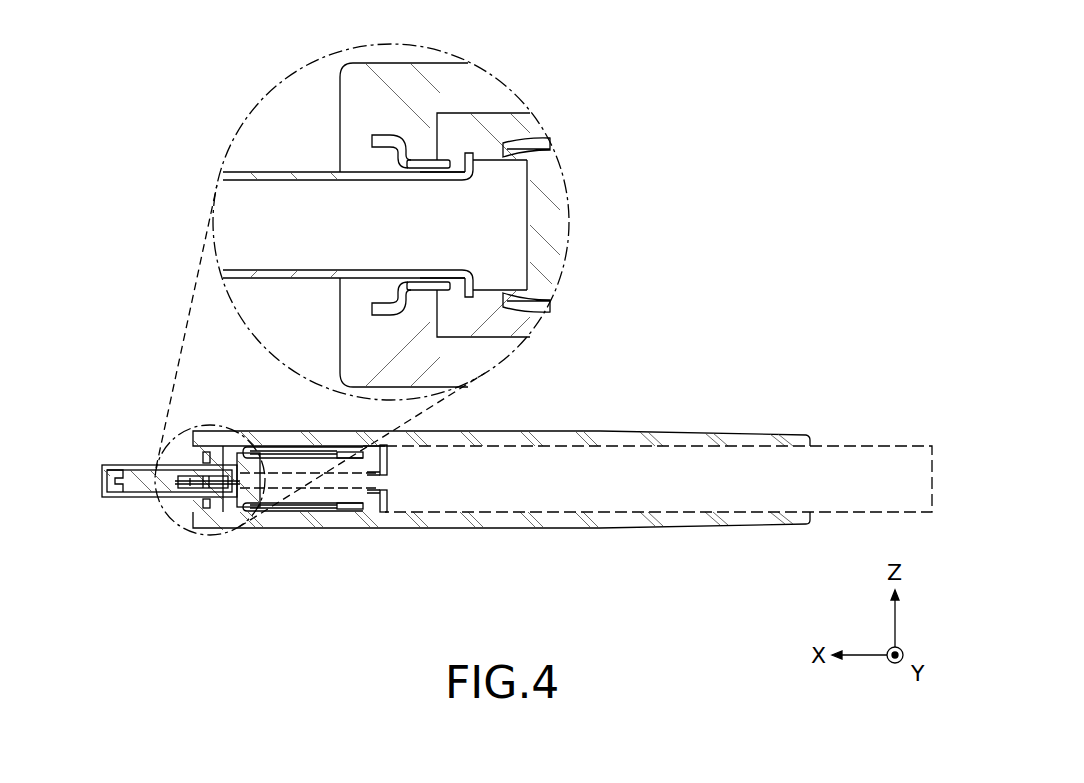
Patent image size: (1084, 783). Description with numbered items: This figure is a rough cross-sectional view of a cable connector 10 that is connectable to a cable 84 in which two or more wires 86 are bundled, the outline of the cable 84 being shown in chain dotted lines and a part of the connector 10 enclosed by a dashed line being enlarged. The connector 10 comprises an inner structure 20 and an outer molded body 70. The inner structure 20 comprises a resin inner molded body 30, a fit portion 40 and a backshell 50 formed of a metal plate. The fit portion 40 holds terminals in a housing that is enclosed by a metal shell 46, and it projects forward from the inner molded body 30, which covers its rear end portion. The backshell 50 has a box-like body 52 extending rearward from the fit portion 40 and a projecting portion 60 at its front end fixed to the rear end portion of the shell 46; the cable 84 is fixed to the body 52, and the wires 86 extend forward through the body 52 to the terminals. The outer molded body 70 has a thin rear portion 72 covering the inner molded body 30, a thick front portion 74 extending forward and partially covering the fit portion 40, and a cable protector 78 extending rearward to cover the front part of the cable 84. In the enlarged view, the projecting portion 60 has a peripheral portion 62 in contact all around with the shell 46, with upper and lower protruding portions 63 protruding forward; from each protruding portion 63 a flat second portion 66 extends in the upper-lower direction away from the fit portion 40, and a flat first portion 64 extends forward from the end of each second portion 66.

The connector 10 is at (101, 463).
The inner structure 20 is at (166, 539).
The inner molded body 30 is at (370, 497).
The fit portion 40 is at (146, 505).
The shell 46 is at (425, 174).
The backshell 50 is at (425, 321).
The body 52 is at (283, 506).
The projecting portion 60 is at (442, 265).
The peripheral portion 62 is at (433, 162).
The protruding portion 63 is at (407, 153).
The first portion 64 is at (381, 138).
The second portion 66 is at (392, 155).
The outer molded body 70 is at (449, 596).
The rear portion 72 is at (398, 520).
The front portion 74 is at (212, 514).
The cable protector 78 is at (515, 520).
The cable 84 is at (688, 448).
The wire 86 is at (373, 443).